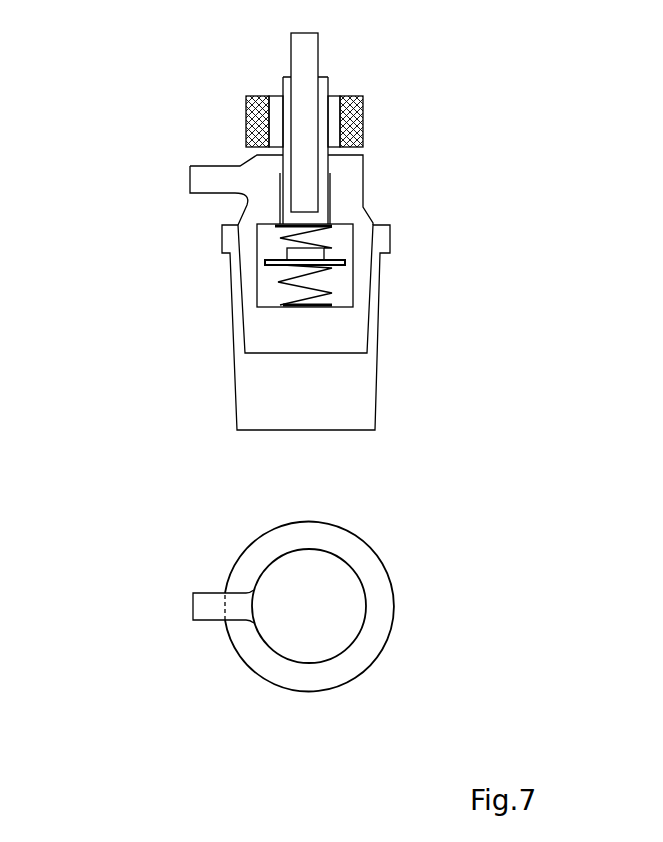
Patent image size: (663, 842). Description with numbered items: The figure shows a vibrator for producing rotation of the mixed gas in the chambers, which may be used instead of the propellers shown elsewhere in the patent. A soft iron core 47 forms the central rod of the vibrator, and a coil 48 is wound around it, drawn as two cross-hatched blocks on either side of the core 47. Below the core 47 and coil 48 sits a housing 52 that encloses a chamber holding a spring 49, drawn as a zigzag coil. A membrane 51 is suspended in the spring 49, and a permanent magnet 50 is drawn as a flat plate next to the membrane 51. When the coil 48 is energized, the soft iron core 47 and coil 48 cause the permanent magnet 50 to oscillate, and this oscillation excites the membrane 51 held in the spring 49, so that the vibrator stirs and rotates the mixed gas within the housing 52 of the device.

The soft iron core 47 is at (290, 51).
The coil 48 is at (246, 117).
The spring 49 is at (280, 237).
The permanent magnet 50 is at (265, 262).
The membrane 51 is at (288, 250).
The housing 52 is at (235, 383).